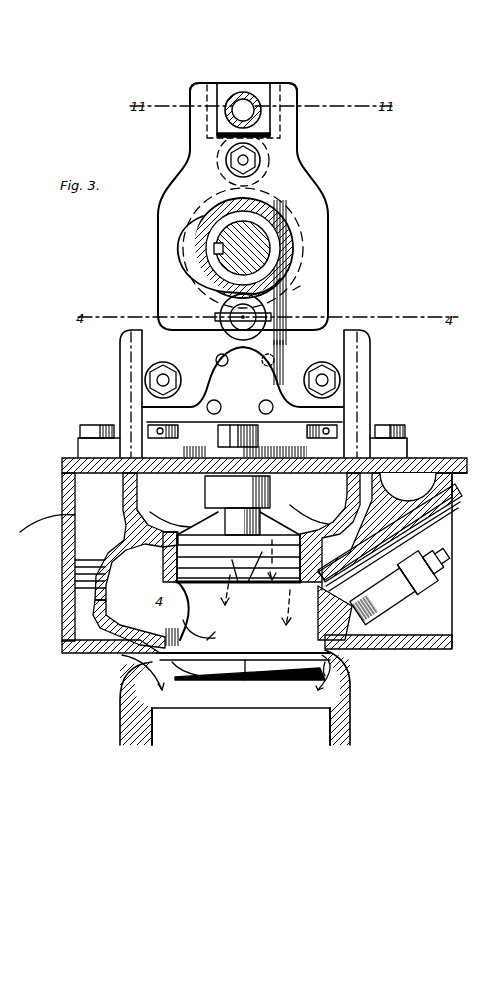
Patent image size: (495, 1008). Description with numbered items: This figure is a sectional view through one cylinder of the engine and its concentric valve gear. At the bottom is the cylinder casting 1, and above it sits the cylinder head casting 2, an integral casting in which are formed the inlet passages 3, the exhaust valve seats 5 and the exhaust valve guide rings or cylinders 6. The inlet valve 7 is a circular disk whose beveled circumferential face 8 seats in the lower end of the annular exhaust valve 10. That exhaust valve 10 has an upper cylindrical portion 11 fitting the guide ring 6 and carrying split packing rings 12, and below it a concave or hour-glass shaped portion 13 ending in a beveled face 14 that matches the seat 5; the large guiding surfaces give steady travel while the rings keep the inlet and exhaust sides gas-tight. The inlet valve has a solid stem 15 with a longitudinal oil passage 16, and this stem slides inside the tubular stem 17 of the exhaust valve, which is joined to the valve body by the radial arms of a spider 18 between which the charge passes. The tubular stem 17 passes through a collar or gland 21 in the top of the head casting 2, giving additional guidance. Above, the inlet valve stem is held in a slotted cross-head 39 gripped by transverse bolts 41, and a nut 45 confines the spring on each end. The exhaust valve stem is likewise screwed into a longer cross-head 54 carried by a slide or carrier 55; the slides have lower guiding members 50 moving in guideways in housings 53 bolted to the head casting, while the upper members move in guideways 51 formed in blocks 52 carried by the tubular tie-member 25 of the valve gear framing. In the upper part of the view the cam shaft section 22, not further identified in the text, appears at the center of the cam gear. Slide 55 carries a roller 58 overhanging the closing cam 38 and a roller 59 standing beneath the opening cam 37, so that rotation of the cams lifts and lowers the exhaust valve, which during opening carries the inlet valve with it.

The cylinder casting 1 is at (241, 719).
The cylinder head casting 2 is at (426, 468).
The inlet passages 3 is at (170, 533).
The exhaust valve seats 5 is at (110, 660).
The exhaust valve guide rings or cylinders 6 is at (142, 572).
The inlet valve 7 is at (232, 668).
The beveled circumferential face 8 is at (246, 680).
The exhaust valve 10 is at (256, 582).
The cylindrical portion 11 is at (230, 560).
The split packing rings 12 is at (244, 582).
The concave or hour-glass shaped portion 13 is at (183, 618).
The beveled face 14 is at (222, 645).
The stem 15 is at (390, 562).
The longitudinal oil passage 16 is at (385, 526).
The tubular stem 17 is at (300, 512).
The spider 18 is at (205, 520).
The collar or gland 21 is at (237, 505).
The crankshaft 22 is at (271, 252).
The tubular tie-member 25 is at (262, 118).
The cam 37 is at (196, 250).
The cam 38 is at (293, 290).
The cross-head 39 is at (272, 352).
The transverse bolt 41 is at (273, 362).
The nut 45 is at (158, 440).
The guiding members 50 is at (118, 332).
The guideways 51 is at (210, 88).
The blocks 52 is at (243, 83).
The housings 53 is at (120, 390).
The cross-head 54 is at (205, 430).
The slide or carrier 55 is at (330, 228).
The roller 58 is at (266, 165).
The roller 59 is at (268, 334).